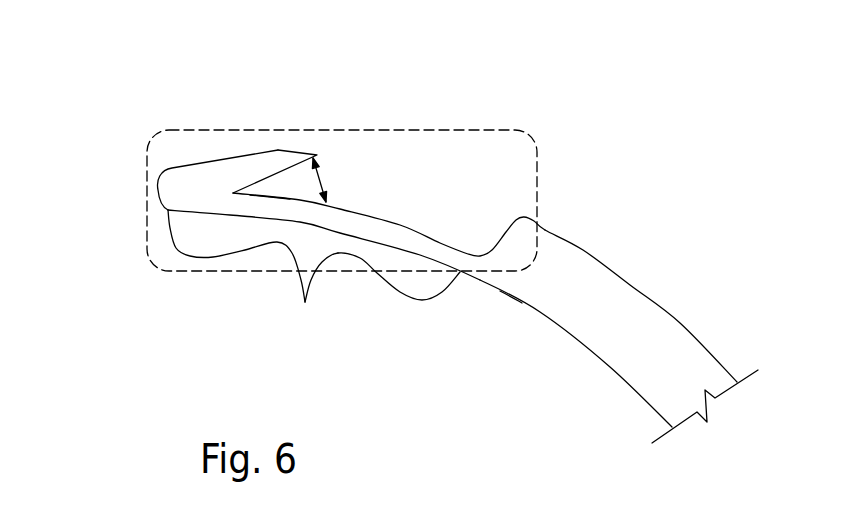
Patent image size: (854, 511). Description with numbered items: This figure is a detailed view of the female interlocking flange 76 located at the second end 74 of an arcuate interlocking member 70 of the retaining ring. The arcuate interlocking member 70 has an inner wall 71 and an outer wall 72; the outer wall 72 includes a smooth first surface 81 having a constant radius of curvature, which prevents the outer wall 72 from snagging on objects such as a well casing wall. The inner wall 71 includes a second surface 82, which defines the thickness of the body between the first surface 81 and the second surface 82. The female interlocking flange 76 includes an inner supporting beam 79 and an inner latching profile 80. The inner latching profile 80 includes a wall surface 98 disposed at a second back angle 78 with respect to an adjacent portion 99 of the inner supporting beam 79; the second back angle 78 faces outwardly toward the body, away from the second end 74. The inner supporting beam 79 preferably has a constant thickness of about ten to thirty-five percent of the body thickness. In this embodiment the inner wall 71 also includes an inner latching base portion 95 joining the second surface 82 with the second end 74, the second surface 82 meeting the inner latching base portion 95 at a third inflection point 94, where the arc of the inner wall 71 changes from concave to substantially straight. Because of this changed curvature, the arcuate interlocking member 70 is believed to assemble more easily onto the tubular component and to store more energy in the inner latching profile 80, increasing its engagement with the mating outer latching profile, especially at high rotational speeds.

The arcuate interlocking member 70 is at (160, 90).
The female interlocking flange 76 is at (152, 135).
The inner latching profile 80 is at (170, 167).
The second end 74 is at (170, 208).
The wall surface 98 is at (281, 166).
The second back angle 78 is at (320, 180).
The inner supporting beam 79 is at (377, 213).
The adjacent portion 99 is at (271, 200).
The inner latching base portion 95 is at (253, 272).
The third inflection point 94 is at (460, 272).
The outer wall 72 is at (682, 320).
The first surface 81 is at (582, 250).
The inner wall 71 is at (610, 369).
The second surface 82 is at (517, 300).